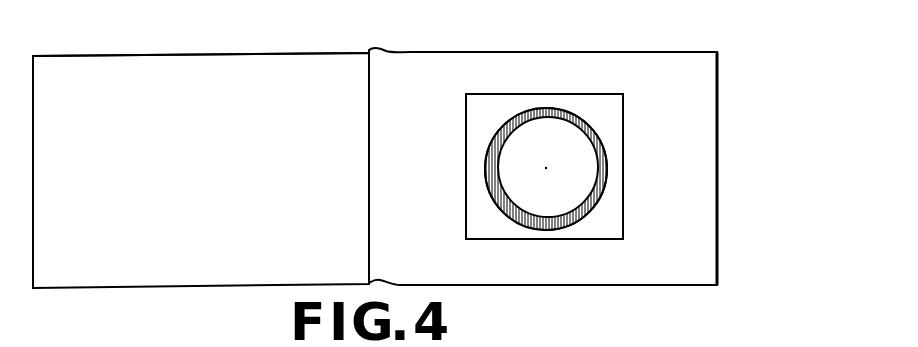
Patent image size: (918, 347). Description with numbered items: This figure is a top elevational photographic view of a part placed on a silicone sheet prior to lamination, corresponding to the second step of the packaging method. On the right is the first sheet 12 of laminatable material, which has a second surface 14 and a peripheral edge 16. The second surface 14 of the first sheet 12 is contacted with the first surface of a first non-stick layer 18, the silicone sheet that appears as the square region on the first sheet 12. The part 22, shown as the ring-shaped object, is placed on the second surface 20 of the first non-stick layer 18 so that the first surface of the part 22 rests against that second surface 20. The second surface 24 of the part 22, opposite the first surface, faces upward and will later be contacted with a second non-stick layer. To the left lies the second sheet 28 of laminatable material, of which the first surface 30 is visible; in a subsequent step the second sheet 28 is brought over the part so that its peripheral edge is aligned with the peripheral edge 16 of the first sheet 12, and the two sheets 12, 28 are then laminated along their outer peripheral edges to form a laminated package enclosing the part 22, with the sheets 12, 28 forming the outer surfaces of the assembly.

The first sheet 12 is at (730, 81).
The second surface 14 is at (702, 165).
The peripheral edge 16 is at (718, 108).
The first non-stick layer 18 is at (611, 203).
The second surface 20 is at (607, 219).
The part 22 is at (485, 196).
The second surface 24 is at (491, 151).
The second sheet 28 is at (266, 79).
The first surface 30 is at (160, 72).